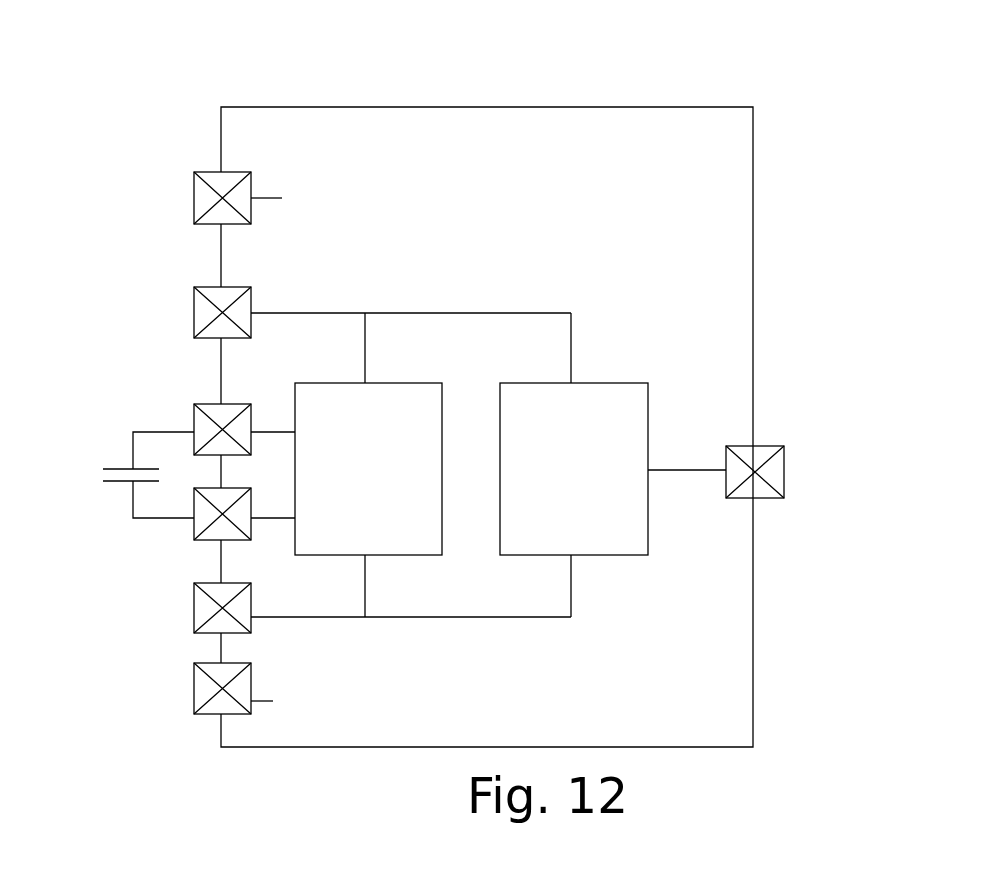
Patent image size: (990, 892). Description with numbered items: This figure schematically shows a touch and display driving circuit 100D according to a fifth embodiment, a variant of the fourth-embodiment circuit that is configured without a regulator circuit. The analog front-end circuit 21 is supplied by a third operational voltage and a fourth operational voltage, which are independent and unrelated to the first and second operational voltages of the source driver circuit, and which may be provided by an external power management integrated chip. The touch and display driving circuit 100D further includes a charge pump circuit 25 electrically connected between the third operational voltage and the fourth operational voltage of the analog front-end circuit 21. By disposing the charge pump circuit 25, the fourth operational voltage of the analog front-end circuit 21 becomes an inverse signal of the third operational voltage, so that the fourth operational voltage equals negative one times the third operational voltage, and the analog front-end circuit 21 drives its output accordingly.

The touch and display driving circuit 100D is at (805, 137).
The charge pump circuit 25 is at (389, 498).
The analog front-end circuit 21 is at (597, 498).